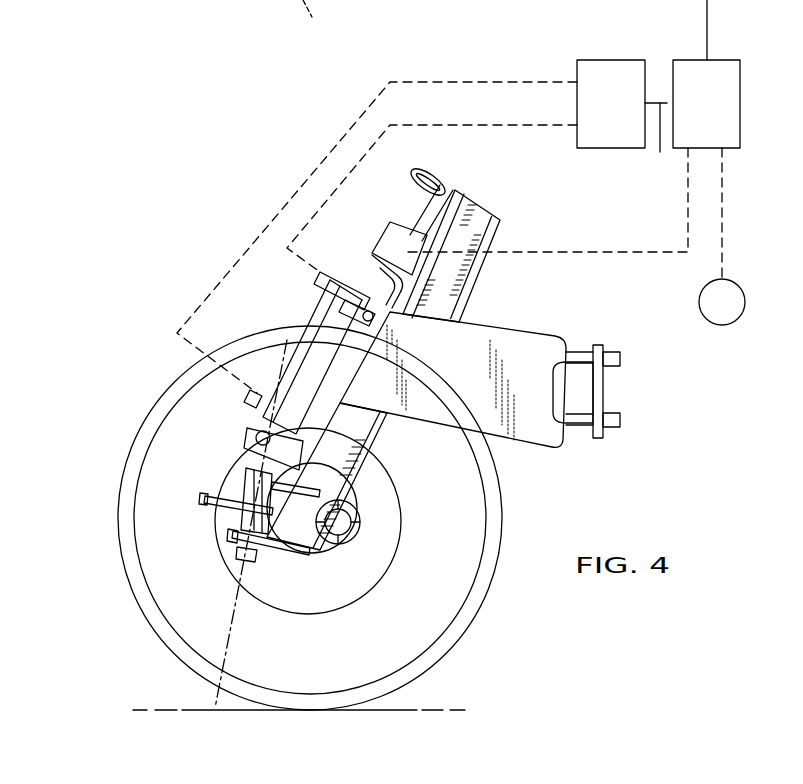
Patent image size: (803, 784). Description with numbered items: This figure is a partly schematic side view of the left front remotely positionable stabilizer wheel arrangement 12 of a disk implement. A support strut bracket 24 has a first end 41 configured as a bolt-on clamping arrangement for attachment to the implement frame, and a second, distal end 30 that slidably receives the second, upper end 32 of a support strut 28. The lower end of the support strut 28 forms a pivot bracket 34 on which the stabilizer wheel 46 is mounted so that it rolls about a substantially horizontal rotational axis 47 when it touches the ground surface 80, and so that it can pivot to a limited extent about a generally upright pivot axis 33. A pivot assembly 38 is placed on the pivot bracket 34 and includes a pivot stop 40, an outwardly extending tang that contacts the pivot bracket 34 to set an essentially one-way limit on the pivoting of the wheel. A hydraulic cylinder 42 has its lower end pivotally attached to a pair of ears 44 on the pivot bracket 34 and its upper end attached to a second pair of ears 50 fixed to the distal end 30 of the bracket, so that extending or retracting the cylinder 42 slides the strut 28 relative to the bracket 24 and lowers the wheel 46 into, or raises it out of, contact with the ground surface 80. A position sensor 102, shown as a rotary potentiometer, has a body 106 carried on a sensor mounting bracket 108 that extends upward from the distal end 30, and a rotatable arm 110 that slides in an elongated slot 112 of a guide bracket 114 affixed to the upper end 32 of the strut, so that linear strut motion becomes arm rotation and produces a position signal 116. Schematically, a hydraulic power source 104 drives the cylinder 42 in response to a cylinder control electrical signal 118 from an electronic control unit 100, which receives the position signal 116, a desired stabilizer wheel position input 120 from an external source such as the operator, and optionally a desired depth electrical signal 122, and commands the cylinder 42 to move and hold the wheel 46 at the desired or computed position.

The remotely positionable stabilizer wheel arrangement 12 is at (98, 546).
The support strut bracket 24 is at (549, 336).
The support strut 28 is at (492, 204).
The second end of the support strut bracket 30 is at (466, 320).
The second end of the support strut 32 is at (467, 262).
The pivot axis 33 is at (238, 610).
The pivot bracket 34 is at (272, 545).
The pivot assembly 38 is at (248, 490).
The pivot stop 40 is at (200, 500).
The first end of the support strut bracket 41 is at (590, 348).
The hydraulic cylinder 42 is at (322, 344).
The pair of ears 44 is at (253, 450).
The stabilizer wheel 46 is at (187, 636).
The rotational axis 47 is at (340, 545).
The second pair of ears 50 is at (348, 312).
The ground surface 80 is at (386, 712).
The electronic control unit 100 is at (678, 150).
The position sensor 102 is at (390, 234).
The hydraulic power source 104 is at (614, 58).
The body 106 is at (413, 238).
The sensor mounting bracket 108 is at (392, 286).
The rotatable arm 110 is at (430, 212).
The elongated slot 112 is at (446, 180).
The guide bracket 114 is at (424, 176).
The electrical signal 116 is at (602, 254).
The cylinder control electrical signal 118 is at (660, 154).
The desired stabilizer wheel position input 120 is at (706, 40).
The desired depth electrical signal 122 is at (724, 205).